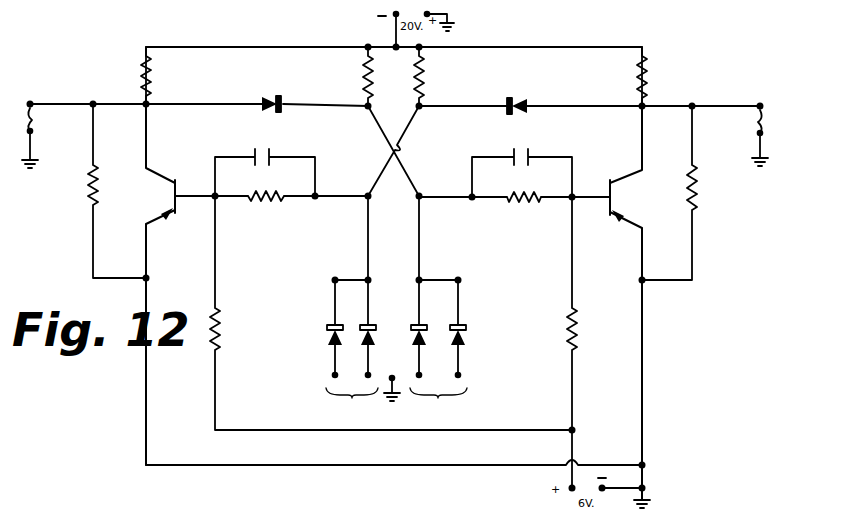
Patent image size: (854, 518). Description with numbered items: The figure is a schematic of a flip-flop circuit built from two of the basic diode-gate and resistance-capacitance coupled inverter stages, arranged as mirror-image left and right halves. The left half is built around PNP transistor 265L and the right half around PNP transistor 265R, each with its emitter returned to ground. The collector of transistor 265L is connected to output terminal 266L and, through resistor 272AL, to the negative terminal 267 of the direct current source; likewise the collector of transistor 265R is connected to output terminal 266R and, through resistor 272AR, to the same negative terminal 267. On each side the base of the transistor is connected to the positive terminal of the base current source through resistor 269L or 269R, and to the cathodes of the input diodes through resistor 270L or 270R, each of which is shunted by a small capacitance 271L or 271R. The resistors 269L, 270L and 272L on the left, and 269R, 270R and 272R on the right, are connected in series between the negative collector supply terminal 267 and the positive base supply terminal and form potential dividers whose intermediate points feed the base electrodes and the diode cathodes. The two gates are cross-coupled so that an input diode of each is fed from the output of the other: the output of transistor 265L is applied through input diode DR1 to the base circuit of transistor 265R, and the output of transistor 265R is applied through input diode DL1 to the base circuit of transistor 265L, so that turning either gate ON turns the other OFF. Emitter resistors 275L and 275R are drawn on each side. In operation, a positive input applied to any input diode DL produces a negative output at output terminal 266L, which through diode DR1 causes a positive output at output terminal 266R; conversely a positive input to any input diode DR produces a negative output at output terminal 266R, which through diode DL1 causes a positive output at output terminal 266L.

The transistor 265L is at (165, 178).
The transistor 265R is at (626, 176).
The output terminal 266L is at (34, 104).
The output terminal 266R is at (770, 98).
The negative terminal 267 is at (392, 45).
The resistor 269L is at (221, 328).
The resistor 269R is at (577, 328).
The resistor 270L is at (266, 202).
The resistor 270R is at (514, 204).
The capacitance 271L is at (246, 174).
The capacitance 271R is at (513, 174).
The resistor 272AL is at (143, 70).
The resistor 272AR is at (617, 76).
The resistor 272L is at (424, 80).
The resistor 272R is at (366, 72).
The left emitter resistor 12K 275L is at (97, 195).
The right emitter resistor 12K 275R is at (698, 197).
The input diode DR1 is at (272, 99).
The input diode DL1 is at (522, 99).
The input diode DL is at (362, 338).
The input diode DR is at (475, 346).